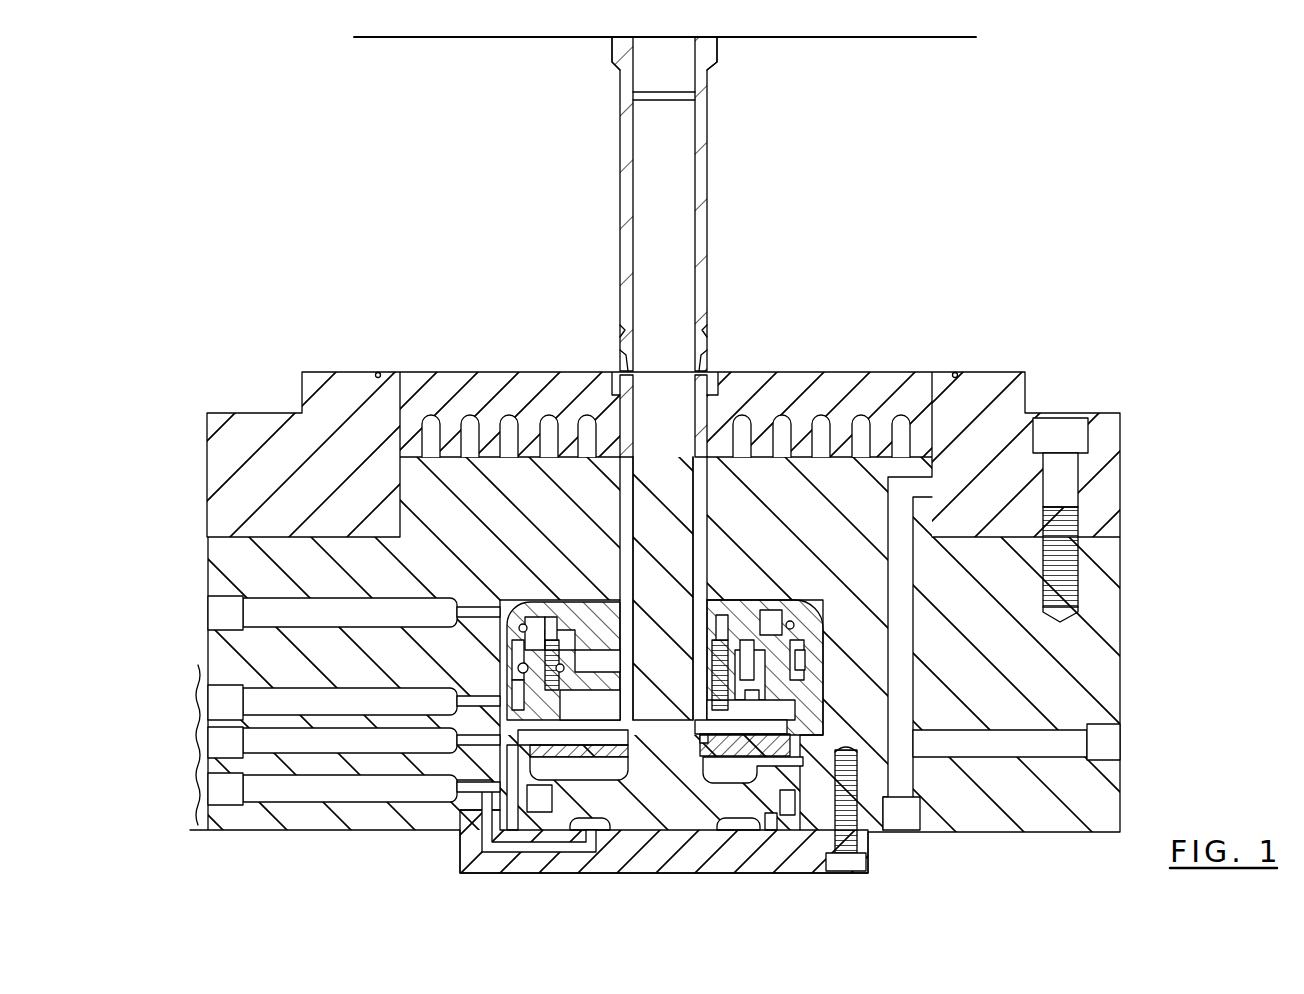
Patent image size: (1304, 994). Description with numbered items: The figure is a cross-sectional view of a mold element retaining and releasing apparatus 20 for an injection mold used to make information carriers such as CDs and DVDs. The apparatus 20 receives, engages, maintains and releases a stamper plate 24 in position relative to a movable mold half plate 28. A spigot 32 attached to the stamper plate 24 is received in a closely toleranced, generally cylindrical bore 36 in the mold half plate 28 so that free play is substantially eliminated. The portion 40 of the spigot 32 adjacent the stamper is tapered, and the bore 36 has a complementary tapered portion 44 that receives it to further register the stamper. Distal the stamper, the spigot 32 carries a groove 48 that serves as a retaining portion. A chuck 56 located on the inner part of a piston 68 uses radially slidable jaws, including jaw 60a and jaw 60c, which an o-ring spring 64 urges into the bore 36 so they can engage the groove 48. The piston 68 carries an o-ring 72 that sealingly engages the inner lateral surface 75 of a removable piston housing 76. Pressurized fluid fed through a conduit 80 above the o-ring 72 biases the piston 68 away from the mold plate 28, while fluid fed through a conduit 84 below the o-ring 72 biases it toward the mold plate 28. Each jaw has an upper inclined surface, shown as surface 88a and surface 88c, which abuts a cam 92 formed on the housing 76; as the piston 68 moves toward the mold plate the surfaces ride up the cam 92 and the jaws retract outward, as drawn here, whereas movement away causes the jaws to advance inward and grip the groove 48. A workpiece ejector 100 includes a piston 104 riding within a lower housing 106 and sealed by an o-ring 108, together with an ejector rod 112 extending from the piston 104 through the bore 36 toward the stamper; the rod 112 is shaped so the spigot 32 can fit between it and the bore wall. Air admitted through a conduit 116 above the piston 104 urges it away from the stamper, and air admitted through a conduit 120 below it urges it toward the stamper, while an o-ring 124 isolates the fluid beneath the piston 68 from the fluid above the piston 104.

The mold element retaining and releasing apparatus 20 is at (925, 333).
The stamper plate 24 is at (858, 37).
The movable mold half plate 28 is at (345, 372).
The spigot 32 is at (708, 228).
The bore 36 is at (703, 486).
The tapered portion of spigot 40 is at (730, 40).
The tapered portion of bore 44 is at (712, 370).
The groove 48 is at (712, 343).
The chuck 56 is at (565, 600).
The jaw 60a is at (752, 630).
The jaw 60c is at (553, 638).
The o-ring spring 64 is at (790, 690).
The piston 68 is at (712, 690).
The o-ring 72 is at (797, 660).
The inner lateral surface 75 is at (540, 700).
The piston housing 76 is at (800, 635).
The conduit 80 is at (310, 608).
The conduit 84 is at (345, 700).
The inclined retaining and guiding surface 88a is at (792, 632).
The inclined retaining and guiding surface 88c is at (520, 626).
The cam 92 is at (745, 640).
The workpiece ejector 100 is at (698, 774).
The piston 104 is at (678, 823).
The lower housing 106 is at (815, 736).
The o-ring 108 is at (552, 798).
The ejector rod 112 is at (679, 550).
The conduit 116 is at (272, 745).
The conduit 120 is at (343, 790).
The o-ring 124 is at (706, 742).